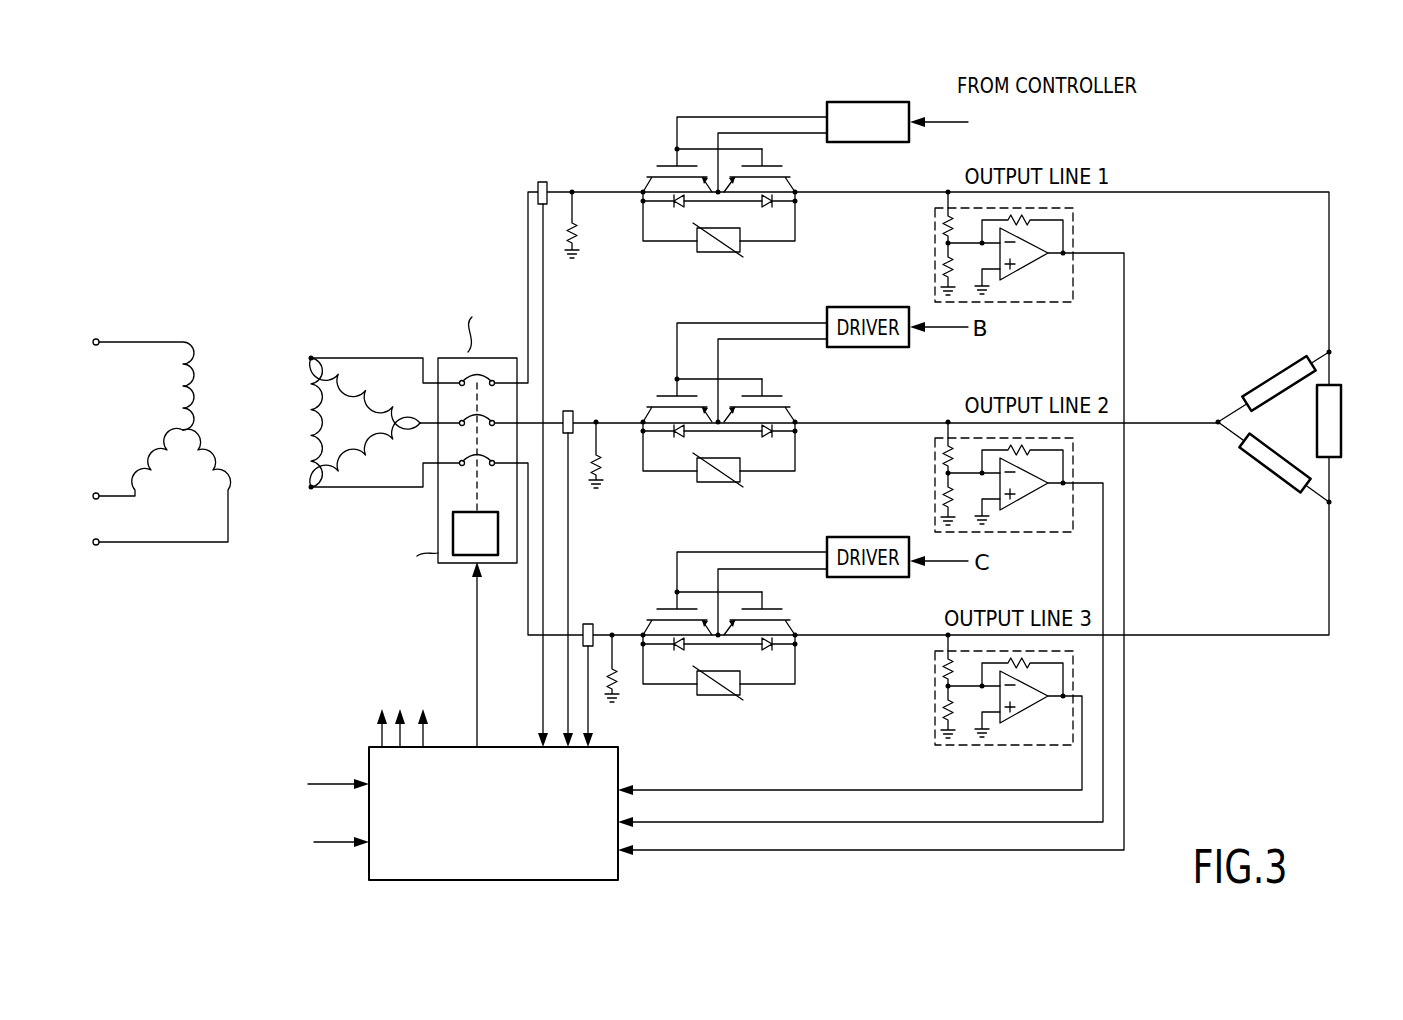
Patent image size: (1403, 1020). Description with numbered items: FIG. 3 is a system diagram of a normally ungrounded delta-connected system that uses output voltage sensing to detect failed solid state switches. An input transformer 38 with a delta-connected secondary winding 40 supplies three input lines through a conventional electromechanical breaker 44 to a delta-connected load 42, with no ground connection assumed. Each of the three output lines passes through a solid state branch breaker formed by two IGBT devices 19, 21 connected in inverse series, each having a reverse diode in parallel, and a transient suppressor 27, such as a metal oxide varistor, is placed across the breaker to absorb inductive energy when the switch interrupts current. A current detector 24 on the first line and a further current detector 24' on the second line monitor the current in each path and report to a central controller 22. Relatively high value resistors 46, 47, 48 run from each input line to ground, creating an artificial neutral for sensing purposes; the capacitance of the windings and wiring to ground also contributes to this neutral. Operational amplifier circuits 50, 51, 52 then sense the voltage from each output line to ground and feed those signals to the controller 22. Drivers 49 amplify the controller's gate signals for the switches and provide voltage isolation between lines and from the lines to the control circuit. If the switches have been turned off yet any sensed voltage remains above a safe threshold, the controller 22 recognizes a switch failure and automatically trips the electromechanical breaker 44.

The device with unilateral blocking and bilateral conducting capability 19 is at (652, 190).
The device with unilateral blocking and bilateral conducting capability 21 is at (795, 192).
The central controller 22 is at (618, 873).
The current detector 24 is at (521, 433).
The current detector 24' is at (588, 551).
The transient suppressor 27 is at (728, 256).
The input transformer 38 is at (208, 410).
The delta-connected secondary winding 40 is at (311, 365).
The delta-connected load 42 is at (1243, 420).
The electromechanical breaker 44 is at (514, 566).
The resistor 46 is at (583, 245).
The resistor 47 is at (604, 474).
The resistor 48 is at (620, 690).
The driver 49 is at (830, 103).
The operational amplifier circuit 50 is at (935, 252).
The operational amplifier circuit 51 is at (935, 490).
The operational amplifier circuit 52 is at (935, 706).